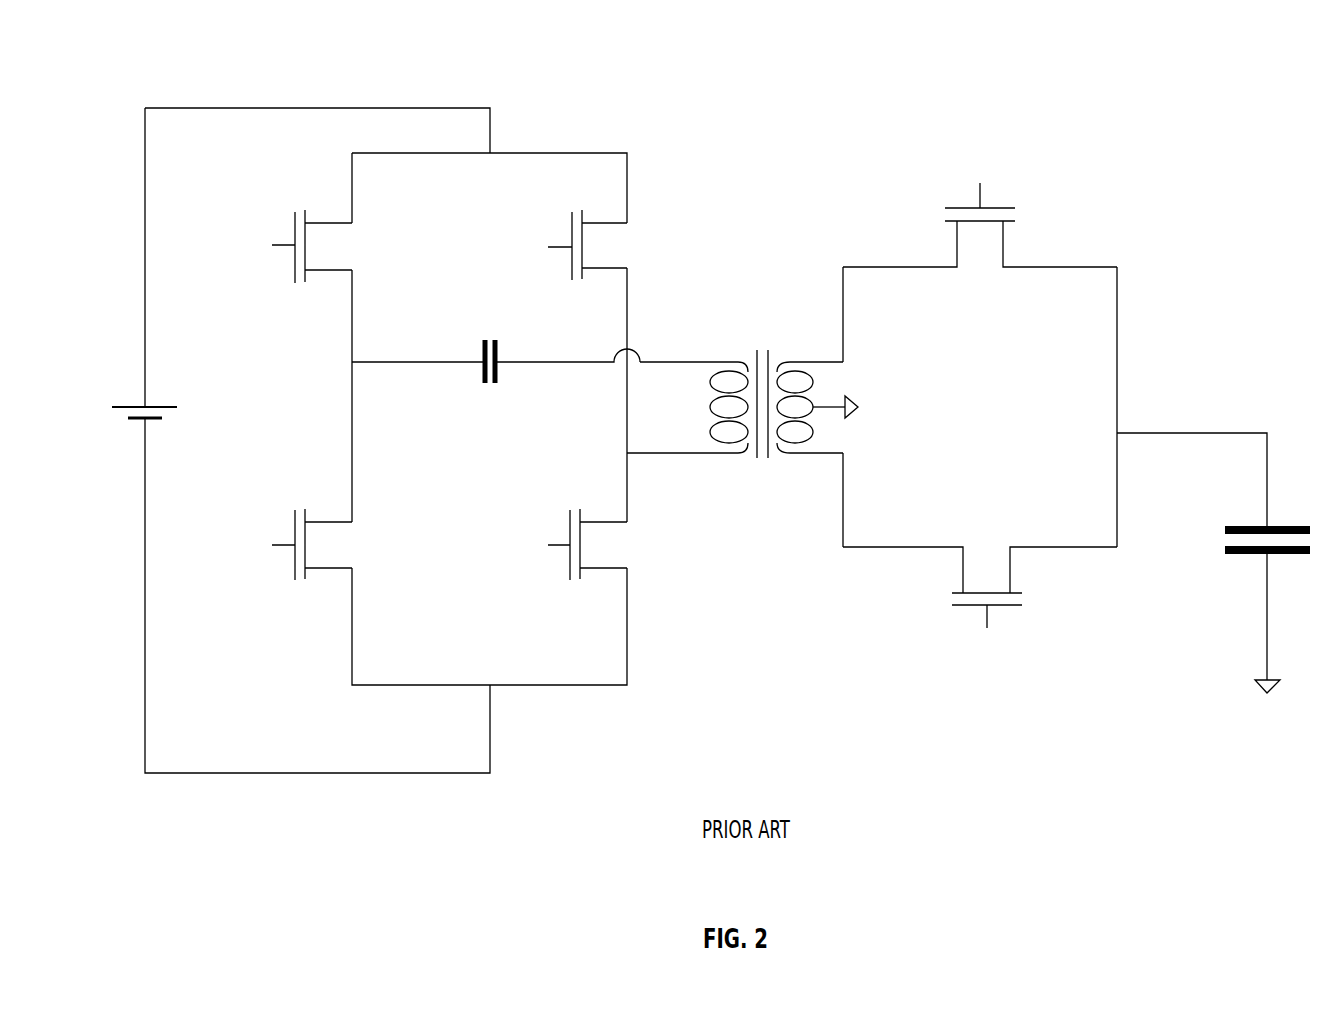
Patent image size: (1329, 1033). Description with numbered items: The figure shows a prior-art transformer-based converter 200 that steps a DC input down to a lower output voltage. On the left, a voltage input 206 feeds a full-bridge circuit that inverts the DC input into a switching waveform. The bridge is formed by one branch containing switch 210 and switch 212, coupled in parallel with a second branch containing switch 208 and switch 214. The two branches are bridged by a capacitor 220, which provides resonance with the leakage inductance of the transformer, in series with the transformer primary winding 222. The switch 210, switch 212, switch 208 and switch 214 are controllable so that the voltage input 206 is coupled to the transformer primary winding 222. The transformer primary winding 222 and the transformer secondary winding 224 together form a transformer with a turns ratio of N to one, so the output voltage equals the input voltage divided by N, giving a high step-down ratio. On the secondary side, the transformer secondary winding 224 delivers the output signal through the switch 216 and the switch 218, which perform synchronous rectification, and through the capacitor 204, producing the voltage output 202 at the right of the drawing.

The transformer-based converter 200 is at (1248, 86).
The voltage output 202 is at (1213, 428).
The capacitor 204 is at (1208, 555).
The voltage input 206 is at (217, 458).
The switch 208 is at (710, 277).
The switch 210 is at (438, 272).
The switch 212 is at (457, 570).
The switch 214 is at (710, 583).
The switch 216 is at (1033, 317).
The switch 218 is at (1035, 533).
The capacitor 220 is at (525, 333).
The transformer primary winding 222 is at (737, 457).
The transformer secondary winding 224 is at (795, 457).